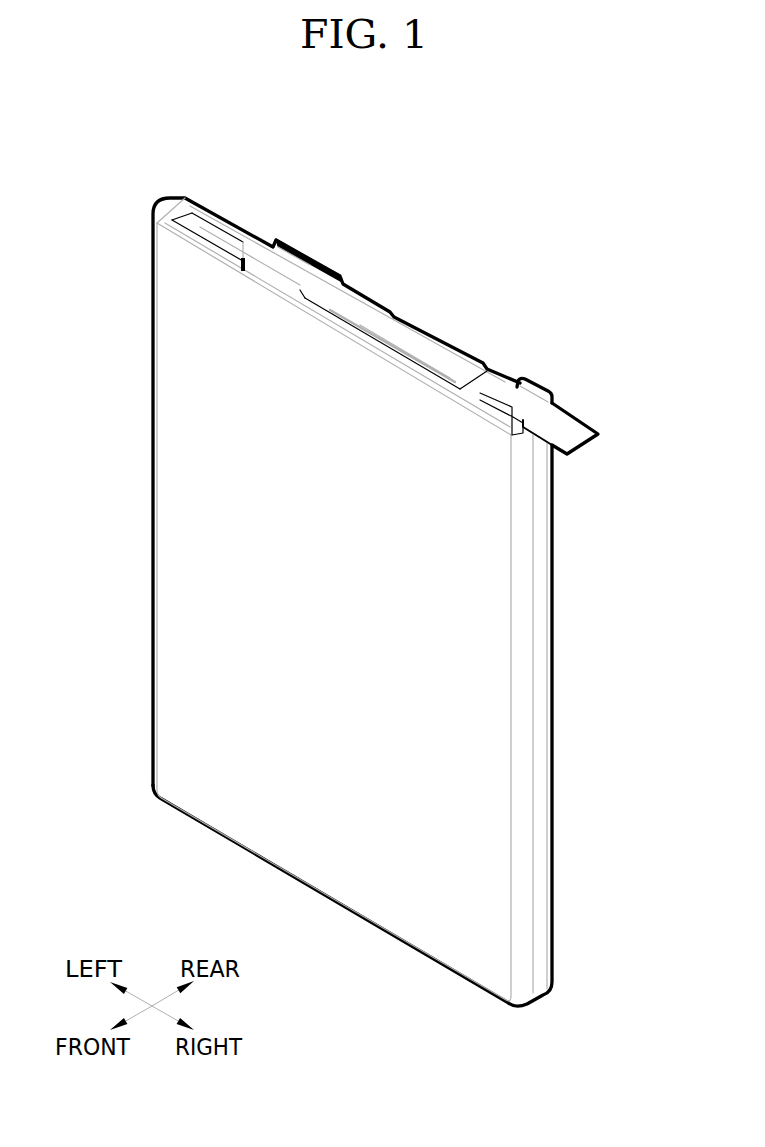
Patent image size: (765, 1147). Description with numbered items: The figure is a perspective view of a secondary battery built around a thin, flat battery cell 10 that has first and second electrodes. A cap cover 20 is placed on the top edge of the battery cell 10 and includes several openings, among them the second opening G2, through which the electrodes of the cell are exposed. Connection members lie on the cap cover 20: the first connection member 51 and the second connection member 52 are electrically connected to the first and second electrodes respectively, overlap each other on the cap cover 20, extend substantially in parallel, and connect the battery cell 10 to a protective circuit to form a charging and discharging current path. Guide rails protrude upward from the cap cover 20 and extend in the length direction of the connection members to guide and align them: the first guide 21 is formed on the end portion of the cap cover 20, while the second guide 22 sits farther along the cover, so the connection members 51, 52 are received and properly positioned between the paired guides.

The battery cell 10 is at (540, 712).
The cap cover 20 is at (167, 208).
The second opening G2 is at (217, 227).
The second guide 22 is at (313, 256).
The second connection member 52 is at (433, 347).
The first guide 21 is at (537, 390).
The first connection member 51 is at (570, 428).